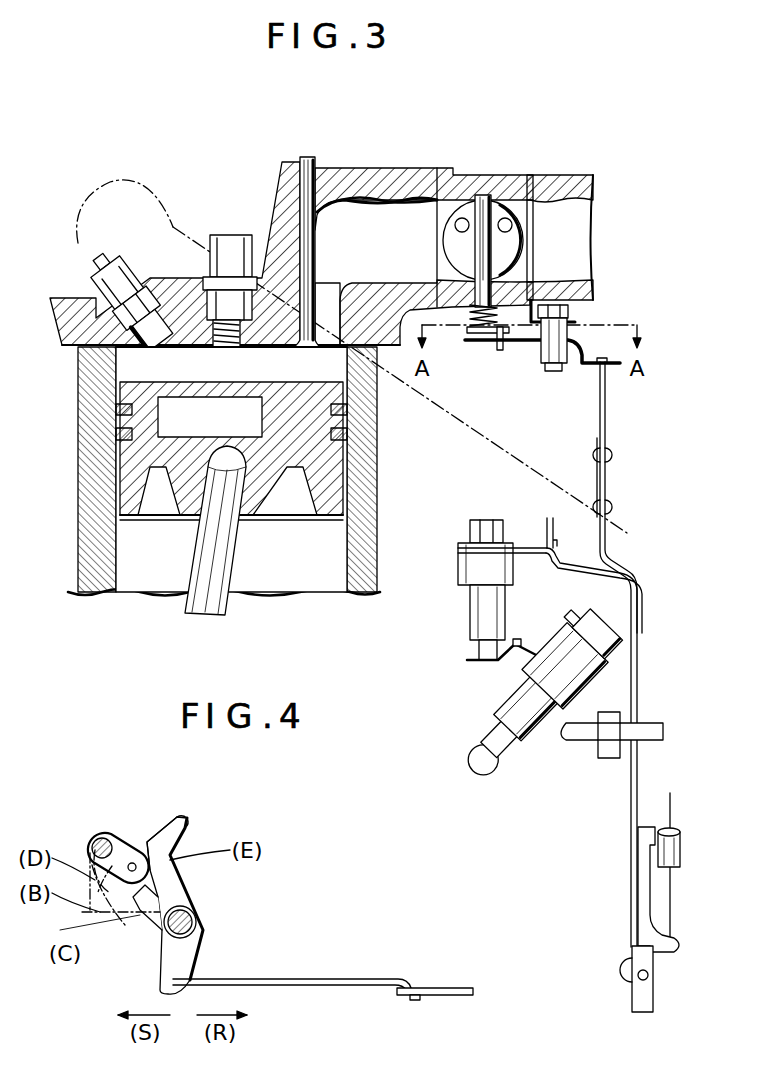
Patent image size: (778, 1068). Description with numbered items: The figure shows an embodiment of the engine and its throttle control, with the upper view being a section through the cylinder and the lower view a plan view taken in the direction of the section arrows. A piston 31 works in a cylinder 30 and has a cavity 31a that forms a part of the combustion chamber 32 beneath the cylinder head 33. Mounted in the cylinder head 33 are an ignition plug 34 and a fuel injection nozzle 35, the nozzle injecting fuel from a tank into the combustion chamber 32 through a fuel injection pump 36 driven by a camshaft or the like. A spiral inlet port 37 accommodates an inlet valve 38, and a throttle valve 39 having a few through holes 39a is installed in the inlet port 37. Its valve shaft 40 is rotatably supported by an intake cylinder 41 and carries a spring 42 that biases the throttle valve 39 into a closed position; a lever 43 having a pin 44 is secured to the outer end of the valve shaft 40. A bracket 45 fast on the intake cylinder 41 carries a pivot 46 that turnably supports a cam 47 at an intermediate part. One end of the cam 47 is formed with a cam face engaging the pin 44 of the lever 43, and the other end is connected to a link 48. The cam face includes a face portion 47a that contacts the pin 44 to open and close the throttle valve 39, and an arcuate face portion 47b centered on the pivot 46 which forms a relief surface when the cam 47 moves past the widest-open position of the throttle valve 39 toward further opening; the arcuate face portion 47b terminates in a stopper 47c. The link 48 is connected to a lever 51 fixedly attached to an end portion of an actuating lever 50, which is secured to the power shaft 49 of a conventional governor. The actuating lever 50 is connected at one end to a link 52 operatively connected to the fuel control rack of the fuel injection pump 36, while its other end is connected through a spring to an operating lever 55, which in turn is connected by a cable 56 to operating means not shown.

In FIG. 3, the cylinder 30 is at (102, 487).
In FIG. 3, the piston 31 is at (128, 440).
In FIG. 3, the cavity 31a is at (128, 405).
In FIG. 3, the combustion chamber 32 is at (138, 365).
In FIG. 3, the cylinder head 33 is at (178, 283).
In FIG. 3, the ignition plug 34 is at (230, 255).
In FIG. 3, the fuel injection nozzle 35 is at (105, 288).
In FIG. 3, the fuel injection pump 36 is at (600, 680).
In FIG. 3, the spiral inlet port 37 is at (362, 213).
In FIG. 3, the inlet valve 38 is at (302, 235).
In FIG. 3, the throttle valve 39 is at (486, 235).
In FIG. 3, the through holes 39a is at (462, 219).
In FIG. 3, the valve shaft 40 is at (492, 258).
In FIG. 4, the valve shaft 40 is at (100, 840).
In FIG. 3, the intake cylinder 41 is at (530, 182).
In FIG. 3, the spring 42 is at (470, 320).
In FIG. 3, the lever 43 is at (490, 335).
In FIG. 4, the lever 43 is at (122, 838).
In FIG. 3, the pin 44 is at (502, 352).
In FIG. 4, the pin 44 is at (134, 862).
In FIG. 3, the bracket 45 is at (582, 318).
In FIG. 3, the pivot 46 is at (553, 370).
In FIG. 4, the pivot 46 is at (198, 928).
In FIG. 3, the cam 47 is at (515, 345).
In FIG. 4, the cam 47 is at (182, 897).
In FIG. 4, the face portion 47a is at (145, 905).
In FIG. 4, the arcuate face portion 47b is at (165, 828).
In FIG. 4, the stopper 47c is at (188, 822).
In FIG. 3, the link 48 is at (607, 372).
In FIG. 4, the link 48 is at (355, 978).
In FIG. 3, the power shaft 49 is at (656, 731).
In FIG. 3, the actuating lever 50 is at (643, 625).
In FIG. 3, the lever 51 is at (606, 420).
In FIG. 3, the link 52 is at (522, 540).
In FIG. 3, the operating lever 55 is at (645, 950).
In FIG. 3, the cable 56 is at (673, 903).